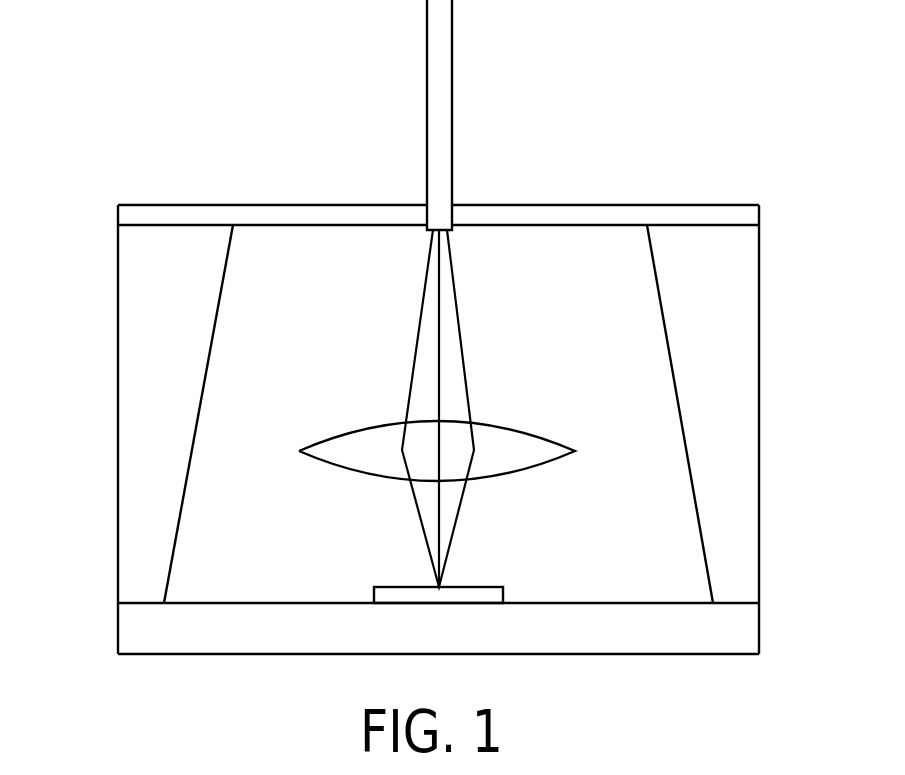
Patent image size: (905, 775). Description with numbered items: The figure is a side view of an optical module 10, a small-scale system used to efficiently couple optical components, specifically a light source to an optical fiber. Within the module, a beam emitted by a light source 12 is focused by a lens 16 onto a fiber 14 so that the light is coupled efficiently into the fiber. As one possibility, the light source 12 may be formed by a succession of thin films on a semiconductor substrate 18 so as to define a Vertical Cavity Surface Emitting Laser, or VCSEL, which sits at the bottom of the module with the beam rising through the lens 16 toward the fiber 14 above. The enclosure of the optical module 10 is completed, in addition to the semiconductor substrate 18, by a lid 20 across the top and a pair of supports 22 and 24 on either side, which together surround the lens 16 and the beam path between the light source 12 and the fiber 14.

The optical module 10 is at (766, 81).
The light source 12 is at (478, 587).
The fiber 14 is at (448, 126).
The lens 16 is at (520, 428).
The semiconductor substrate 18 is at (752, 630).
The lid 20 is at (120, 219).
The support 22 is at (120, 322).
The support 24 is at (752, 398).